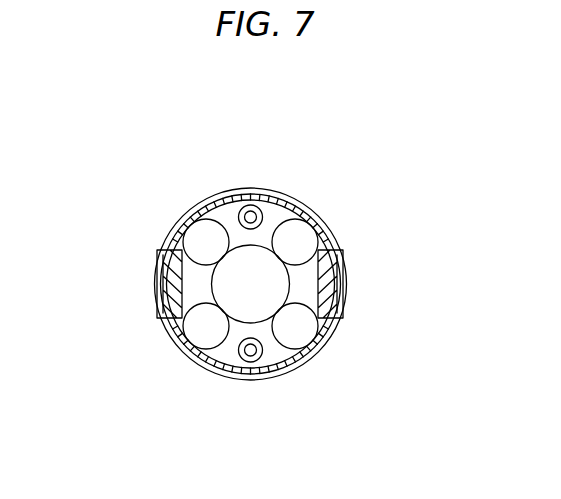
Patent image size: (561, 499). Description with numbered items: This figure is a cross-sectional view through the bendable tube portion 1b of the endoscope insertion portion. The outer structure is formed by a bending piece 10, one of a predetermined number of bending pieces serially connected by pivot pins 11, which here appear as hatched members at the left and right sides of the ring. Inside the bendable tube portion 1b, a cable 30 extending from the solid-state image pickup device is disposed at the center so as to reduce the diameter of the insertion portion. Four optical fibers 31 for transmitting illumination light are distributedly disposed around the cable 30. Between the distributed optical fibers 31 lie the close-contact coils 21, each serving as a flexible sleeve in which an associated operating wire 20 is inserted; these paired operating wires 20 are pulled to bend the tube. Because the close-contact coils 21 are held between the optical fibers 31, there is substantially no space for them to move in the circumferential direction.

The bendable tube portion 1b is at (300, 203).
The bending piece 10 is at (203, 208).
The pivot pin 11 is at (152, 280).
The operating wire 20 is at (248, 192).
The close-contact coil 21 is at (232, 205).
The cable 30 is at (275, 288).
The optical fiber 31 is at (197, 233).